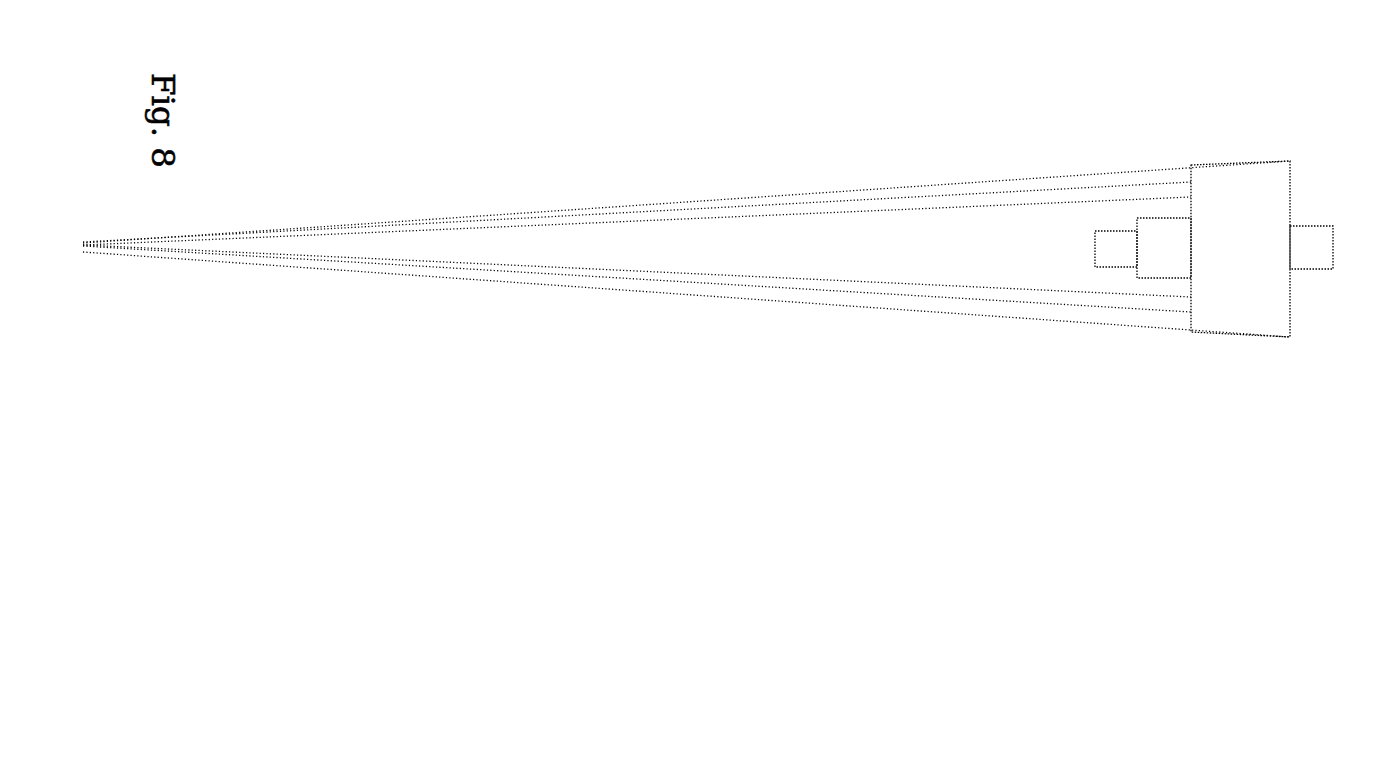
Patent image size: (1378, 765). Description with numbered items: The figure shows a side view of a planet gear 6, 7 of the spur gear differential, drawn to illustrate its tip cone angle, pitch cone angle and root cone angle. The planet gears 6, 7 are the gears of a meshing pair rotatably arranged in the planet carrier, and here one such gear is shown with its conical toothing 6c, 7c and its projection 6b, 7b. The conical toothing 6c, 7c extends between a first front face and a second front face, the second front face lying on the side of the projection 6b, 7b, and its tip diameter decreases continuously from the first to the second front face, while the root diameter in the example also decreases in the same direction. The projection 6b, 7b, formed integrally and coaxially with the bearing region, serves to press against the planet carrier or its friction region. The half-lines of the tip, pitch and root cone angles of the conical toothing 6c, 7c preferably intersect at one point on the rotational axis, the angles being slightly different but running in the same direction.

The planet gear 6 is at (1215, 246).
The planet gear 7 is at (1215, 246).
The projection 6b is at (1134, 164).
The projection 7b is at (1166, 232).
The conical toothing 6c is at (1232, 308).
The conical toothing 7c is at (1232, 338).